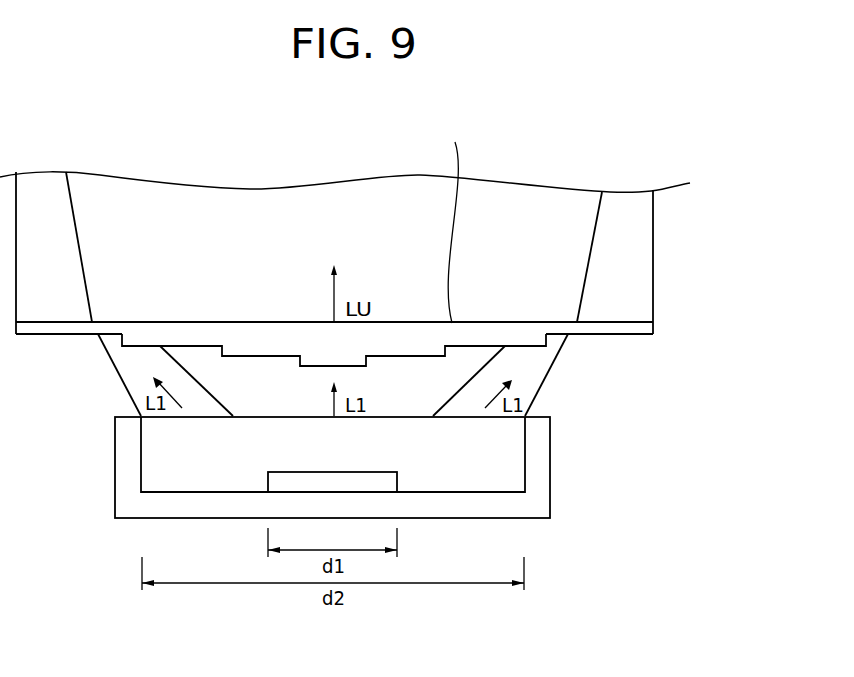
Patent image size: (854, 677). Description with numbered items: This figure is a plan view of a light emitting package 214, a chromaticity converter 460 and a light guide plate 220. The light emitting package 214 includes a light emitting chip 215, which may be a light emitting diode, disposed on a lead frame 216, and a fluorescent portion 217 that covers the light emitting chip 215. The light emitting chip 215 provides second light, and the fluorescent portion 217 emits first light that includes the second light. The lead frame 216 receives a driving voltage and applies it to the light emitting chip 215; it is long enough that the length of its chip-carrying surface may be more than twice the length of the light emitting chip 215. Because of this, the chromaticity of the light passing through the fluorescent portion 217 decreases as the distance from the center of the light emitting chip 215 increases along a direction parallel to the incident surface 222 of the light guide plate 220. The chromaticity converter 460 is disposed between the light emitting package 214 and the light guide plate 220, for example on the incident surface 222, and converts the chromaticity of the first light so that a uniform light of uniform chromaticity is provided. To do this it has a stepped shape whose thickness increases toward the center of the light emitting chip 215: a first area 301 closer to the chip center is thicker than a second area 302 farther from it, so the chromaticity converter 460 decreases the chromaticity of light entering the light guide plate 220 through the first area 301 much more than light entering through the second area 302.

The light emitting package 214 is at (396, 467).
The light emitting chip 215 is at (397, 472).
The lead frame 216 is at (540, 495).
The fluorescent portion 217 is at (502, 442).
The light guide plate 220 is at (640, 258).
The incident surface 222 is at (452, 221).
The first area 301 is at (334, 365).
The second area 302 is at (333, 375).
The chromaticity converter 460 is at (648, 330).